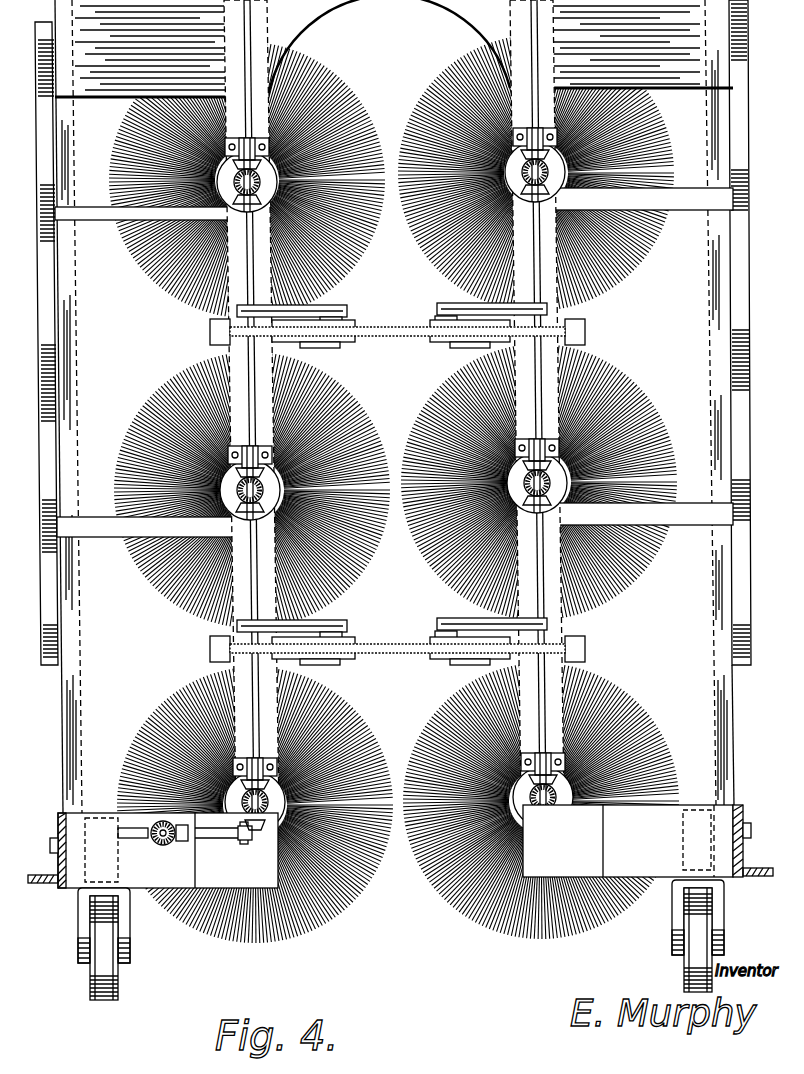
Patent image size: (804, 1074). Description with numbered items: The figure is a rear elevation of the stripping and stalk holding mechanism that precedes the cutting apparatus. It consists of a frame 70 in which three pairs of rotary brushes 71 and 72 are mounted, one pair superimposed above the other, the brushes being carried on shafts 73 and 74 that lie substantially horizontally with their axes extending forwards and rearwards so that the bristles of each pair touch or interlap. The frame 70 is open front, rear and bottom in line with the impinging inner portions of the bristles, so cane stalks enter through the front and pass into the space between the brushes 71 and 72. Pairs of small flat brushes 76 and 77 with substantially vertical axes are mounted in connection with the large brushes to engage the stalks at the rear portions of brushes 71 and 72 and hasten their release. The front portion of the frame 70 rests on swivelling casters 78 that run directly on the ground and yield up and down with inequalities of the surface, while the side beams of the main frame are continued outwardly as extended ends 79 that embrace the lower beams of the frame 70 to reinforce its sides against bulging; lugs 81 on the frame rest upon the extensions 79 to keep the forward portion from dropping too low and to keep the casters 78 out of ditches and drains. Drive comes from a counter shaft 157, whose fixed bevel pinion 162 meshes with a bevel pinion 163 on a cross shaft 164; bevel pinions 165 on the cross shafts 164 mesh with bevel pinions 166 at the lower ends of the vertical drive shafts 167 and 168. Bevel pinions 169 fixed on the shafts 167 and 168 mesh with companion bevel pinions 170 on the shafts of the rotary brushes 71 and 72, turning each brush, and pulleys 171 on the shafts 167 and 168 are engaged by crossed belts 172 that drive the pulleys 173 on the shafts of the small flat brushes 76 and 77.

The frame 70 is at (750, 272).
The brush 71 is at (345, 82).
The brush 72 is at (447, 70).
The shaft 73 is at (236, 192).
The shaft 74 is at (550, 185).
The small flat brush 76 is at (377, 336).
The small flat brush 77 is at (404, 326).
The caster 78 is at (123, 980).
The extended end 79 is at (48, 877).
The lug 81 is at (50, 842).
The counter shaft 157 is at (148, 840).
The bevel pinion 162 is at (168, 850).
The bevel pinion 163 is at (135, 825).
The cross shaft 164 is at (214, 840).
The bevel pinion 165 is at (261, 842).
The bevel pinion 166 is at (547, 818).
The vertical drive shaft 167 is at (253, 694).
The vertical drive shaft 168 is at (548, 674).
The bevel pinion 169 is at (536, 128).
The bevel pinion 170 is at (549, 494).
The pulley 171 is at (246, 614).
The crossed belt 172 is at (350, 626).
The pulley 173 is at (352, 617).